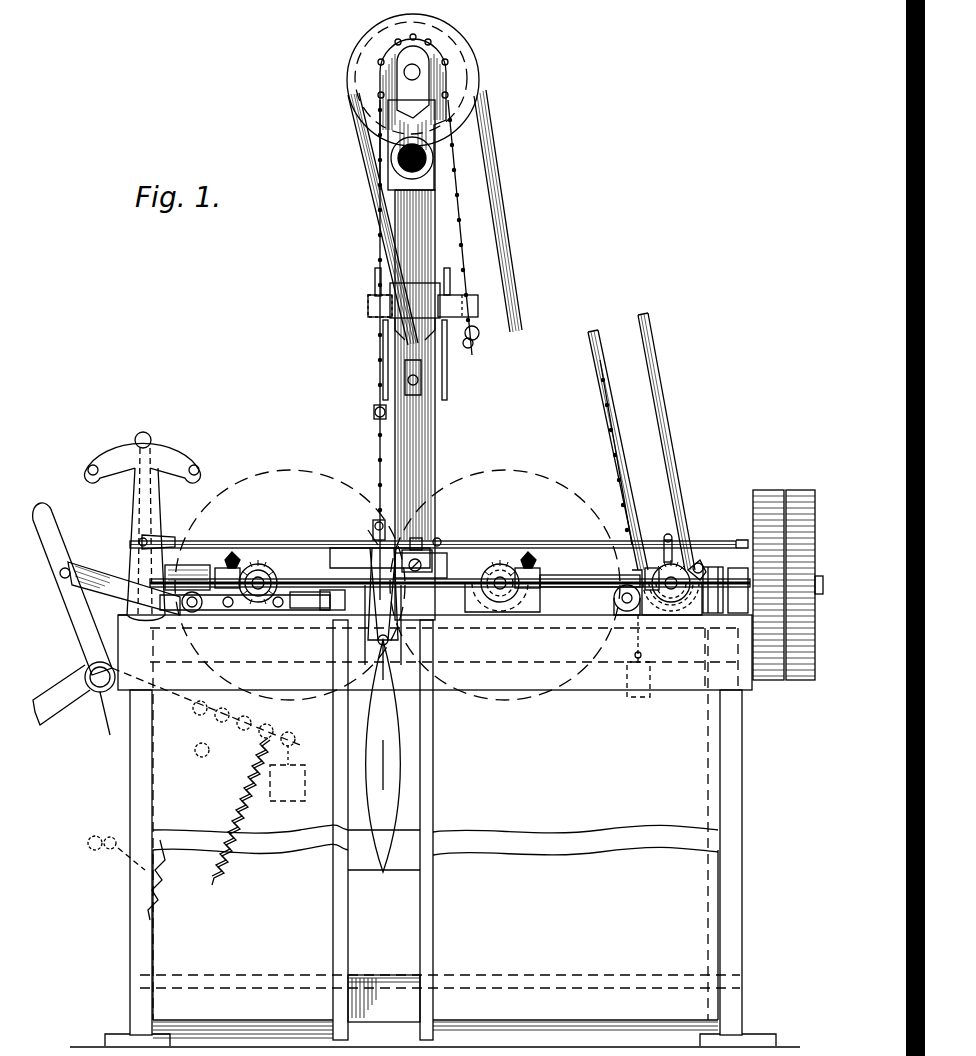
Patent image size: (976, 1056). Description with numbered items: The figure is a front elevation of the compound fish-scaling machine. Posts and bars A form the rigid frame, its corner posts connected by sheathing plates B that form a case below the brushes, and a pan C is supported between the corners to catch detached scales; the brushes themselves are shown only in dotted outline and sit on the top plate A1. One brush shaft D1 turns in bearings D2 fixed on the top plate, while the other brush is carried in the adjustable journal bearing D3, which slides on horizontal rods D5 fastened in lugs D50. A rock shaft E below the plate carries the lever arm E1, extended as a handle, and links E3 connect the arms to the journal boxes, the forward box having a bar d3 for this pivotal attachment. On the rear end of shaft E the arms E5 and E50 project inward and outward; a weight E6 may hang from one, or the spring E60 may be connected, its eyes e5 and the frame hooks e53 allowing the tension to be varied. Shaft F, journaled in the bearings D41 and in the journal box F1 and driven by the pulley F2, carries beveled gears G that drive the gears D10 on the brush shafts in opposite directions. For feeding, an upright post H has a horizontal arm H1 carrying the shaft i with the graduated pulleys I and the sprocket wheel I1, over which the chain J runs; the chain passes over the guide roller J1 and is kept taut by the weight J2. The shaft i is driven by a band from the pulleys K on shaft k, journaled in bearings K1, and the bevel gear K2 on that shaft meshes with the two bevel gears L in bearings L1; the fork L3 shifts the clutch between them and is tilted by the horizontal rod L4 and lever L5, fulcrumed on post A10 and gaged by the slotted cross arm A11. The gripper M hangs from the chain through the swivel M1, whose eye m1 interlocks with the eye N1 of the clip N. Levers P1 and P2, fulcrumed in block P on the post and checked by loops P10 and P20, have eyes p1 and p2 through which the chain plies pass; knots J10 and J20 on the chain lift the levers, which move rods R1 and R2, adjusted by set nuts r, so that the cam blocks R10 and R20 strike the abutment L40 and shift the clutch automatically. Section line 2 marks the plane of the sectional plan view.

The posts and bars of the rigid frame A is at (130, 958).
The top plate A1 is at (742, 678).
The post A10 is at (162, 525).
The slotted cross arm A11 is at (165, 462).
The sheathing plates B is at (435, 853).
The pan or tray C is at (384, 998).
The brush shaft D1 is at (258, 560).
The fixed bearings D2 is at (505, 560).
The adjustable journal bearing D3 is at (450, 567).
The horizontal rods D5 is at (315, 592).
The beveled gear D10 is at (236, 565).
The bearings for shaft F D41 is at (187, 566).
The lugs D50 is at (325, 610).
The bar d3 is at (232, 608).
The rock shaft E is at (98, 688).
The forward lever arm E1 is at (70, 605).
The links E3 is at (110, 578).
The lever arm E5 is at (125, 695).
The weight E6 is at (287, 773).
The lever arm E50 is at (55, 708).
The spring E60 is at (200, 836).
The eyes e5 is at (244, 729).
The spring anchor e53 is at (116, 853).
The shaft F is at (590, 571).
The journal box F1 is at (740, 565).
The pulley F2 is at (768, 535).
The beveled gear G is at (230, 558).
The upright post H is at (395, 208).
The horizontal arm H1 is at (434, 155).
The pulleys I is at (385, 36).
The sprocket wheel I1 is at (382, 60).
The shaft i is at (421, 70).
The chain J is at (462, 125).
The guide roller J1 is at (622, 608).
The weight J2 is at (632, 685).
The knot J10 is at (374, 412).
The knot J20 is at (482, 336).
The pulleys K is at (646, 556).
The bearings K1 is at (653, 565).
The bevel gear K2 is at (666, 535).
The horizontal shaft k is at (697, 562).
The bevel gears L is at (690, 545).
The bearings L1 is at (712, 600).
The fork L3 is at (690, 540).
The horizontal rod L4 is at (300, 540).
The lever L5 is at (152, 505).
The abutment L40 is at (420, 545).
The gripper M is at (368, 610).
The swivel M1 is at (345, 545).
The eye m1 is at (372, 530).
The clip N is at (377, 520).
The eye N1 is at (376, 524).
The fulcrum block P is at (428, 295).
The lever P1 is at (380, 292).
The lever P2 is at (455, 298).
The loop P10 is at (376, 278).
The loop P20 is at (450, 275).
The eye p1 is at (372, 306).
The eye p2 is at (470, 308).
The rod R1 is at (383, 375).
The rod R2 is at (447, 375).
The cam block R10 is at (430, 555).
The cam block R20 is at (447, 560).
The set nut r is at (440, 541).
The section line 2 is at (140, 546).